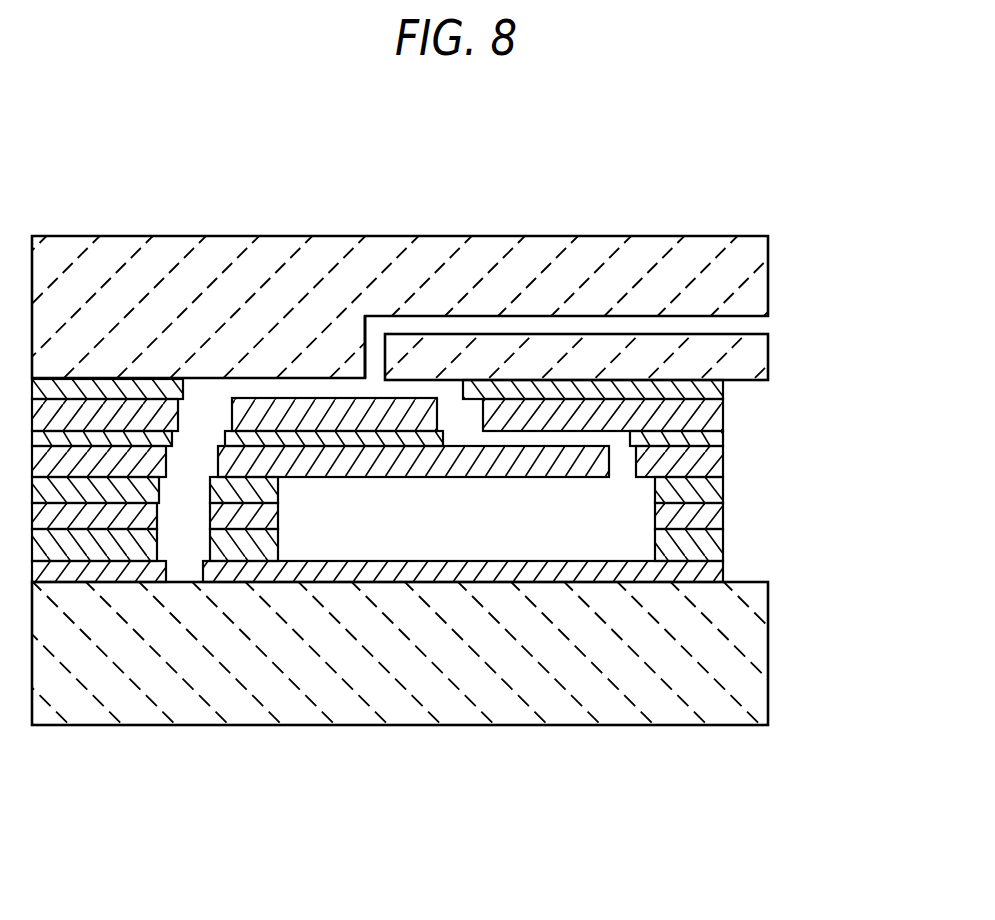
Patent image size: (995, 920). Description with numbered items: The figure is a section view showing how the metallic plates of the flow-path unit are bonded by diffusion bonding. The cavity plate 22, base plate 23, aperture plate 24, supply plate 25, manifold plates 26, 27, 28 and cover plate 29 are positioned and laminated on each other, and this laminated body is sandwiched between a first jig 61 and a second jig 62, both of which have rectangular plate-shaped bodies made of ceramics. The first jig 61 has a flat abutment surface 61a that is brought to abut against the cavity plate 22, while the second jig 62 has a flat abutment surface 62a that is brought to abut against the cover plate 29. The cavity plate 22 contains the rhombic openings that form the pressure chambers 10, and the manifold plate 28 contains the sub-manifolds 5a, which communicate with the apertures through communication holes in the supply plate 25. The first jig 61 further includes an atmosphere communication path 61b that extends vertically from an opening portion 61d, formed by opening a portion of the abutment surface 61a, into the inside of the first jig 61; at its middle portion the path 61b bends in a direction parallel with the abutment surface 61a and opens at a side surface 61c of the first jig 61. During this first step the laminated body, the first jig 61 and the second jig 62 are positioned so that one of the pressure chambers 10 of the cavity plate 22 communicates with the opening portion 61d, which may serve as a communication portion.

The first jig 61 is at (116, 224).
The abutment surface 61a is at (255, 385).
The atmosphere communication path 61b is at (533, 323).
The side surface 61c is at (770, 255).
The opening portion 61d is at (372, 377).
The second jig 62 is at (769, 640).
The abutment surface 62a is at (562, 582).
The sub-manifold 5a is at (293, 548).
The pressure chamber 10 is at (386, 392).
The cavity plate 22 is at (723, 389).
The base plate 23 is at (723, 412).
The aperture plate 24 is at (723, 438).
The supply plate 25 is at (723, 461).
The manifold plate 26 is at (723, 490).
The manifold plate 27 is at (723, 516).
The manifold plate 28 is at (723, 545).
The cover plate 29 is at (723, 571).